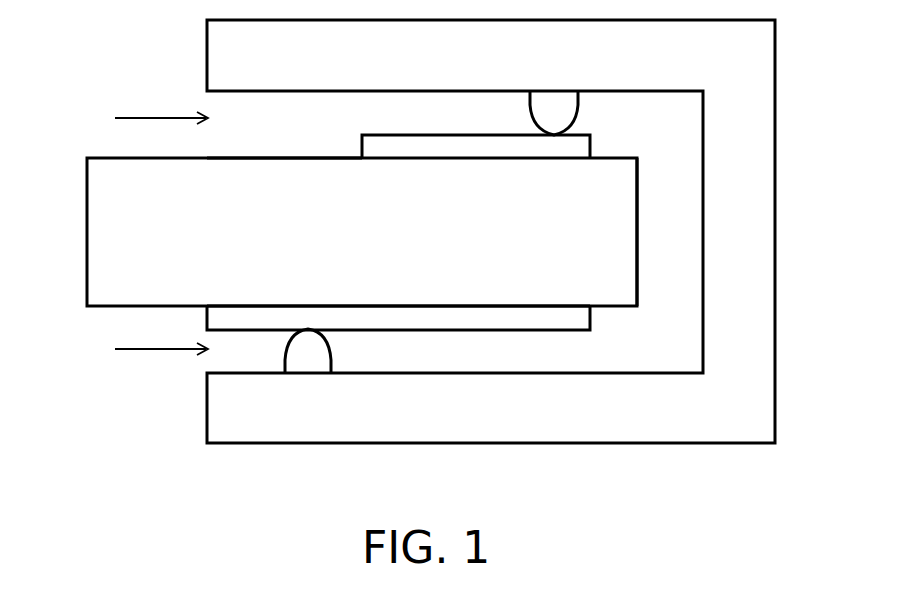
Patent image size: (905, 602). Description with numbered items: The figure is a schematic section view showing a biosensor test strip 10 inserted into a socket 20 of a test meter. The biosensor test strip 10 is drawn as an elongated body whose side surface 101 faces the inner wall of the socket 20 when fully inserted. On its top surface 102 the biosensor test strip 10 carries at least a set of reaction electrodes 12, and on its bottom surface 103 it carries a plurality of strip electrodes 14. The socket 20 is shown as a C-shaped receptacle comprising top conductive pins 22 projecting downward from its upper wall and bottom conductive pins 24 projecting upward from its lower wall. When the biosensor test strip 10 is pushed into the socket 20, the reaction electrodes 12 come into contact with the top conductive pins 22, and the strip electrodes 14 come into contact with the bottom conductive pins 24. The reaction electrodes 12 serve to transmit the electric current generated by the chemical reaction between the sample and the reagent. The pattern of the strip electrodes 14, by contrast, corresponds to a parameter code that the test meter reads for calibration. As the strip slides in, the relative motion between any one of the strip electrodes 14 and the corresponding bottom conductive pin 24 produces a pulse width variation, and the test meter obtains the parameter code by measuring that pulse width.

The biosensor test strip 10 is at (97, 232).
The side surface of substrate 101 is at (637, 200).
The top surface 102 is at (305, 158).
The bottom surface 103 is at (400, 305).
The reaction electrodes 12 is at (487, 148).
The strip electrodes 14 is at (309, 318).
The socket 20 is at (762, 100).
The top conductive pins 22 is at (560, 115).
The bottom conductive pins 24 is at (318, 352).